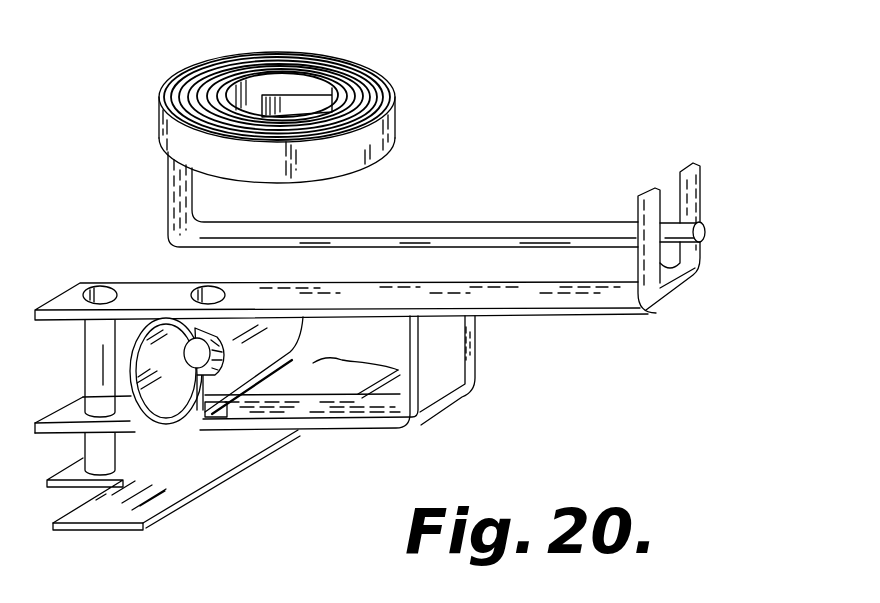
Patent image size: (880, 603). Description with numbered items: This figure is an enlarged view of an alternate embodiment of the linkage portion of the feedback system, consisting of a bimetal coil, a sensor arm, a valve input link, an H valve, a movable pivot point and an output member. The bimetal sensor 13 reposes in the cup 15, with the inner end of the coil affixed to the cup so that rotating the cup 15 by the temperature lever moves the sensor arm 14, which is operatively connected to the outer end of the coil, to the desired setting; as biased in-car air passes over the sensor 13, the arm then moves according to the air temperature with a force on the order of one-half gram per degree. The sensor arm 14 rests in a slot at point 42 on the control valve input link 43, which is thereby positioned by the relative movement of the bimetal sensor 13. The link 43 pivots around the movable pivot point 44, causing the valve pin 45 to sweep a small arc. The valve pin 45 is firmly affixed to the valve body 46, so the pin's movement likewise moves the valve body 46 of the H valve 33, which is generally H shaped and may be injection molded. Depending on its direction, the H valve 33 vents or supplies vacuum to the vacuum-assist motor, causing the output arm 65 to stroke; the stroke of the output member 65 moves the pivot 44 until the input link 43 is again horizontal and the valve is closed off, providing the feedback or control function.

The bimetal sensor 13 is at (332, 78).
The cup 15 is at (396, 121).
The sensor arm 14 is at (512, 228).
The slot 42 is at (681, 211).
The control valve input link 43 is at (620, 313).
The movable pivot point 44 is at (100, 292).
The valve pin 45 is at (203, 293).
The valve body 46 is at (196, 366).
The H valve 33 is at (203, 426).
The output arm 65 is at (163, 504).